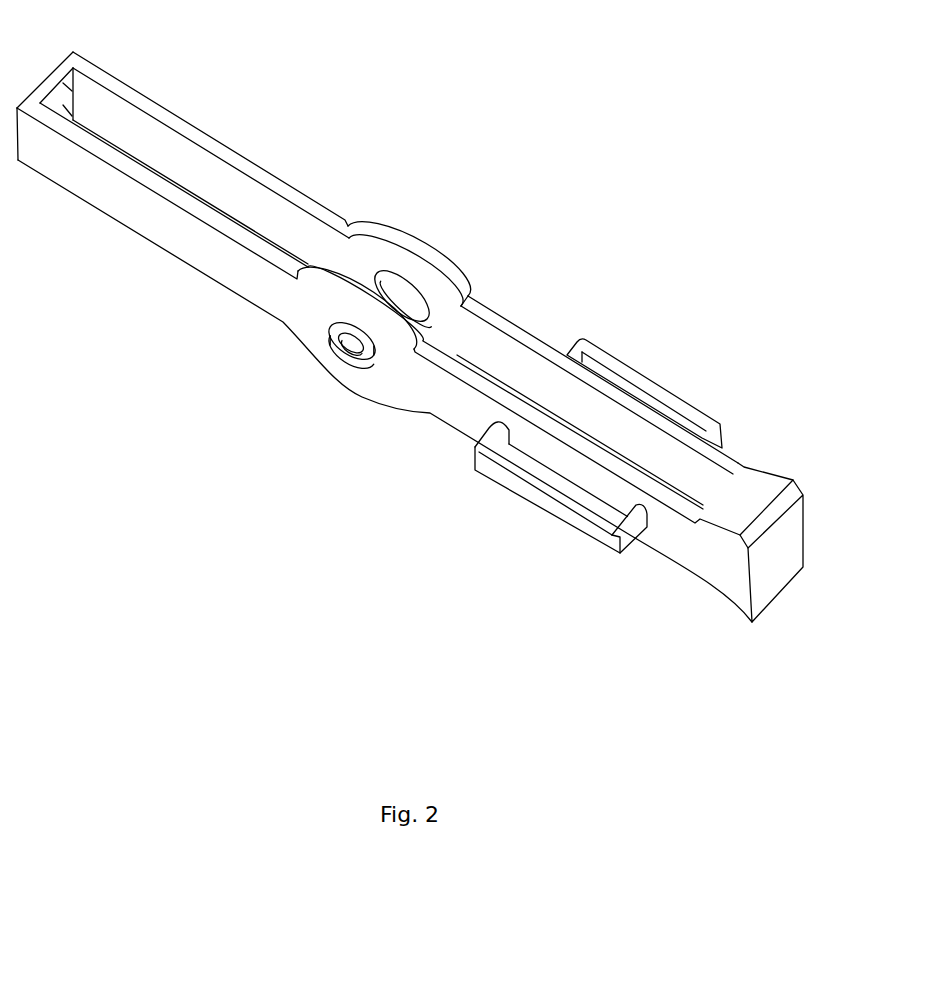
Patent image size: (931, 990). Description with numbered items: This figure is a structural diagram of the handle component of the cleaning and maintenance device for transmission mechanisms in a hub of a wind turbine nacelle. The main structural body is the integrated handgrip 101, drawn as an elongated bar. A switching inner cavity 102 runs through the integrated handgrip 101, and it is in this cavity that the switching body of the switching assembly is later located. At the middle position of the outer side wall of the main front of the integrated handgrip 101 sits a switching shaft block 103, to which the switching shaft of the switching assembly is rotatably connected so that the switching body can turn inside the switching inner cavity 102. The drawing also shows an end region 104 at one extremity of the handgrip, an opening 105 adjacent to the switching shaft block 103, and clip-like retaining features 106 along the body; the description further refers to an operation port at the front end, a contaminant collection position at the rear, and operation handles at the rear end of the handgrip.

The integrated handgrip 101 is at (298, 190).
The switching inner cavity 102 is at (265, 220).
The switching shaft block 103 is at (350, 350).
The end wall at left end 104 is at (66, 94).
The through hole 105 is at (403, 285).
The retaining clip 106 is at (528, 483).